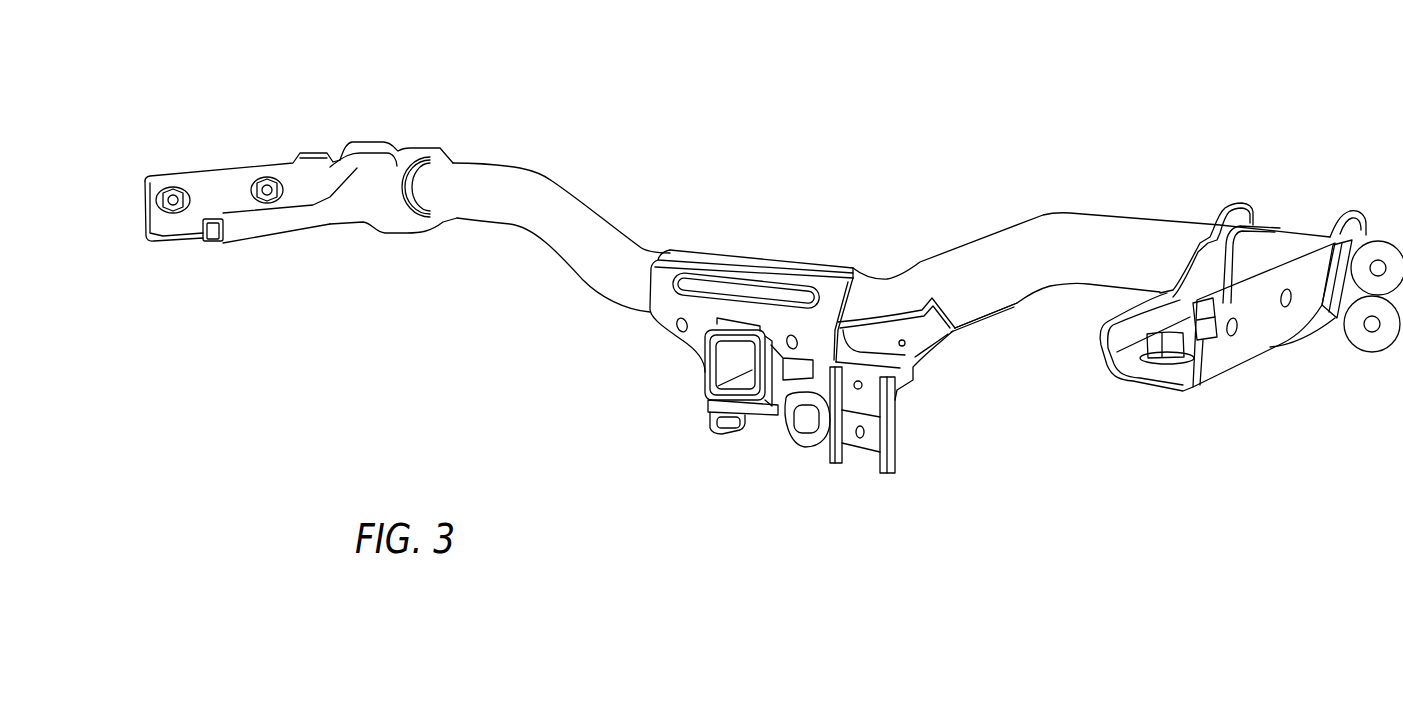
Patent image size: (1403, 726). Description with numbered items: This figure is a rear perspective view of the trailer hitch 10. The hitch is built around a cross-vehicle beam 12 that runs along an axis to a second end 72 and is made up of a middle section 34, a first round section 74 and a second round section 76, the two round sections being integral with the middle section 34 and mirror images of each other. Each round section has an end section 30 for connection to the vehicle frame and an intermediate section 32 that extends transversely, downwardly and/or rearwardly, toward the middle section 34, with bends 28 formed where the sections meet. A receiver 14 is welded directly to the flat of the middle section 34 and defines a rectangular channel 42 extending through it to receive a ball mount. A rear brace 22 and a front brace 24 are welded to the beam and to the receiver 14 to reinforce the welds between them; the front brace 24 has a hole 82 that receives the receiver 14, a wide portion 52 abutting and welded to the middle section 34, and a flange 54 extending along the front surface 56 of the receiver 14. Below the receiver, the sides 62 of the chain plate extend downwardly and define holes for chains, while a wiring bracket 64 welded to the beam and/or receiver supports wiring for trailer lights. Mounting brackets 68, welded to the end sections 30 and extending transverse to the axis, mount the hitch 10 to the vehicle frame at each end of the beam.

The trailer hitch 10 is at (1080, 70).
The cross-vehicle beam 12 is at (527, 167).
The receiver 14 is at (700, 381).
The rear brace 22 is at (778, 360).
The front brace 24 is at (655, 313).
The bend 28 is at (553, 177).
The end section 30 is at (474, 175).
The intermediate section 32 is at (573, 277).
The middle section 34 is at (883, 283).
The channel 42 is at (725, 357).
The wide portion 52 is at (697, 273).
The flange 54 is at (762, 410).
The front surface 56 is at (735, 430).
The sides 62 is at (713, 433).
The wiring bracket 64 is at (895, 440).
The mounting bracket 68 is at (210, 193).
The second end 72 is at (419, 246).
The first round section 74 is at (1120, 243).
The second round section 76 is at (573, 225).
The hole 82 is at (768, 297).